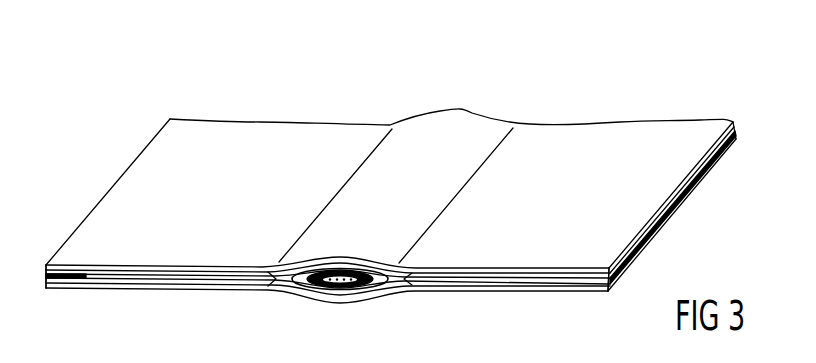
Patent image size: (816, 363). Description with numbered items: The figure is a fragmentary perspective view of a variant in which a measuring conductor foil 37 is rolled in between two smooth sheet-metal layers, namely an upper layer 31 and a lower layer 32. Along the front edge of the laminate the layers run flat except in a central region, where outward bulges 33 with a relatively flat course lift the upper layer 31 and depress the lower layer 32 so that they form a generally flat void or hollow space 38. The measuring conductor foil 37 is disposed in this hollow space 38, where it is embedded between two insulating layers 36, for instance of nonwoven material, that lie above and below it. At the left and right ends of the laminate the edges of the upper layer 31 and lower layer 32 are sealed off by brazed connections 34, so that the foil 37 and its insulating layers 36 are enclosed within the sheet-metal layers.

The upper layer 31 is at (514, 269).
The lower layer 32 is at (508, 295).
The outward bulges 33 is at (348, 305).
The brazed connections 34 is at (46, 288).
The insulating layers 36 is at (285, 291).
The measuring conductor foil 37 is at (352, 256).
The hollow space 38 is at (275, 292).